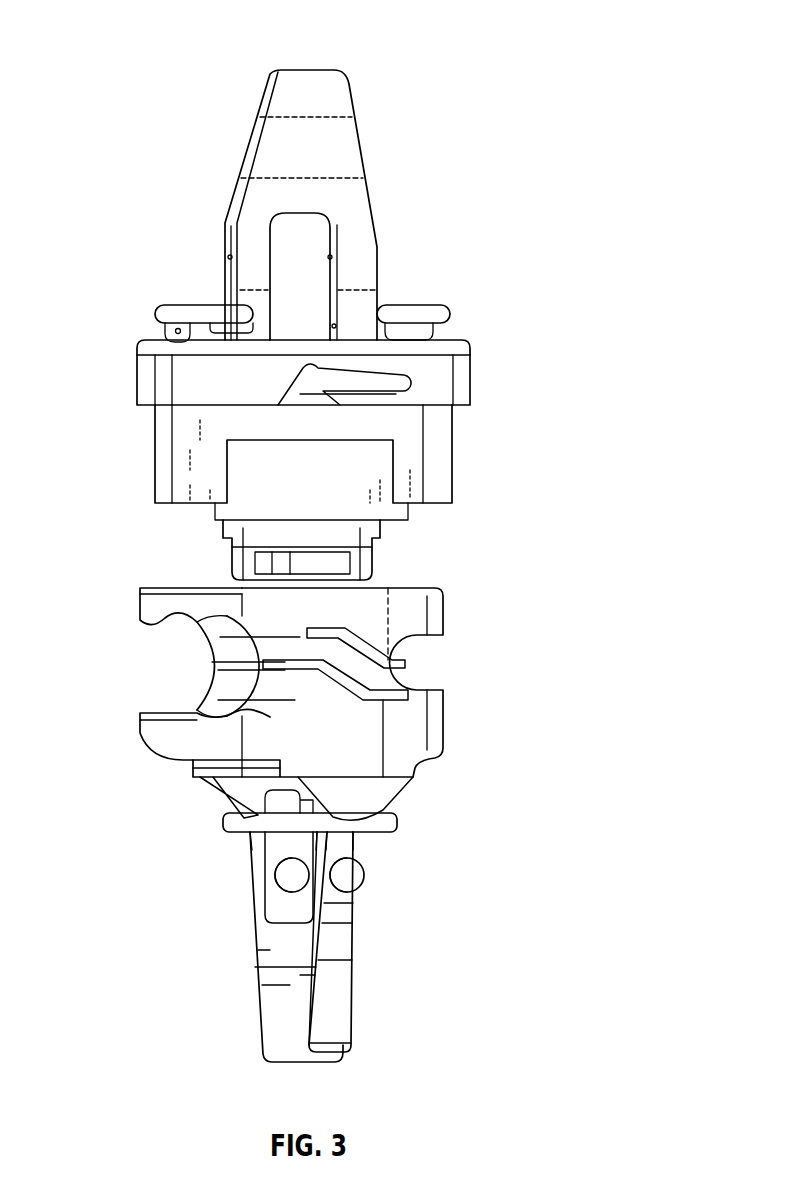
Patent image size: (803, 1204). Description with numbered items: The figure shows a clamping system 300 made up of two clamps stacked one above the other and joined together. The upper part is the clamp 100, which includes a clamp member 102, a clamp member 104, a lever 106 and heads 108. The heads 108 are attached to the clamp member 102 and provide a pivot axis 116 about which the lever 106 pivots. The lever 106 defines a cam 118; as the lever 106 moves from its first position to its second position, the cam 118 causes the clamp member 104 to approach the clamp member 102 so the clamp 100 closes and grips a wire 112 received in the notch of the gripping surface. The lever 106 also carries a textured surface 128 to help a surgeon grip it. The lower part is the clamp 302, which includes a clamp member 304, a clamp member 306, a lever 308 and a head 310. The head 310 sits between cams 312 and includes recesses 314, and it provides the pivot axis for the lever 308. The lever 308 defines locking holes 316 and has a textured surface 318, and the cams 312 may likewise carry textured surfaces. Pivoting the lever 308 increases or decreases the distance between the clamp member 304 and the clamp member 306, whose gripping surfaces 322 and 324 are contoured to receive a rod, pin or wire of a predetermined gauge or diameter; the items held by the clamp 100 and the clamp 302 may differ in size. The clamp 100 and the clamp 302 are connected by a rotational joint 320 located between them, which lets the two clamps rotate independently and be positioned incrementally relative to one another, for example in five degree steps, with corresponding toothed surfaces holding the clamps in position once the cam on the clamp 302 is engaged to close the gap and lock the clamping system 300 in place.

The clamping system 300 is at (143, 42).
The clamp 100 is at (340, 73).
The clamp member 102 is at (137, 380).
The clamp member 104 is at (452, 456).
The lever 106 is at (365, 167).
The heads 108 is at (423, 307).
The wire 112 is at (440, 372).
The pivot axis 116 is at (157, 317).
The cam 118 is at (270, 263).
The textured surface 128 is at (244, 160).
The clamp 302 is at (503, 735).
The clamp member 304 is at (140, 603).
The clamp member 306 is at (140, 733).
The lever 308 is at (257, 967).
The head 310 is at (223, 822).
The cams 312 is at (247, 835).
The recesses 314 is at (221, 809).
The locking holes 316 is at (273, 875).
The textured surface 318 is at (285, 1013).
The rotational joint 320 is at (232, 560).
The gripping surface 322 is at (194, 704).
The gripping surface 324 is at (192, 630).